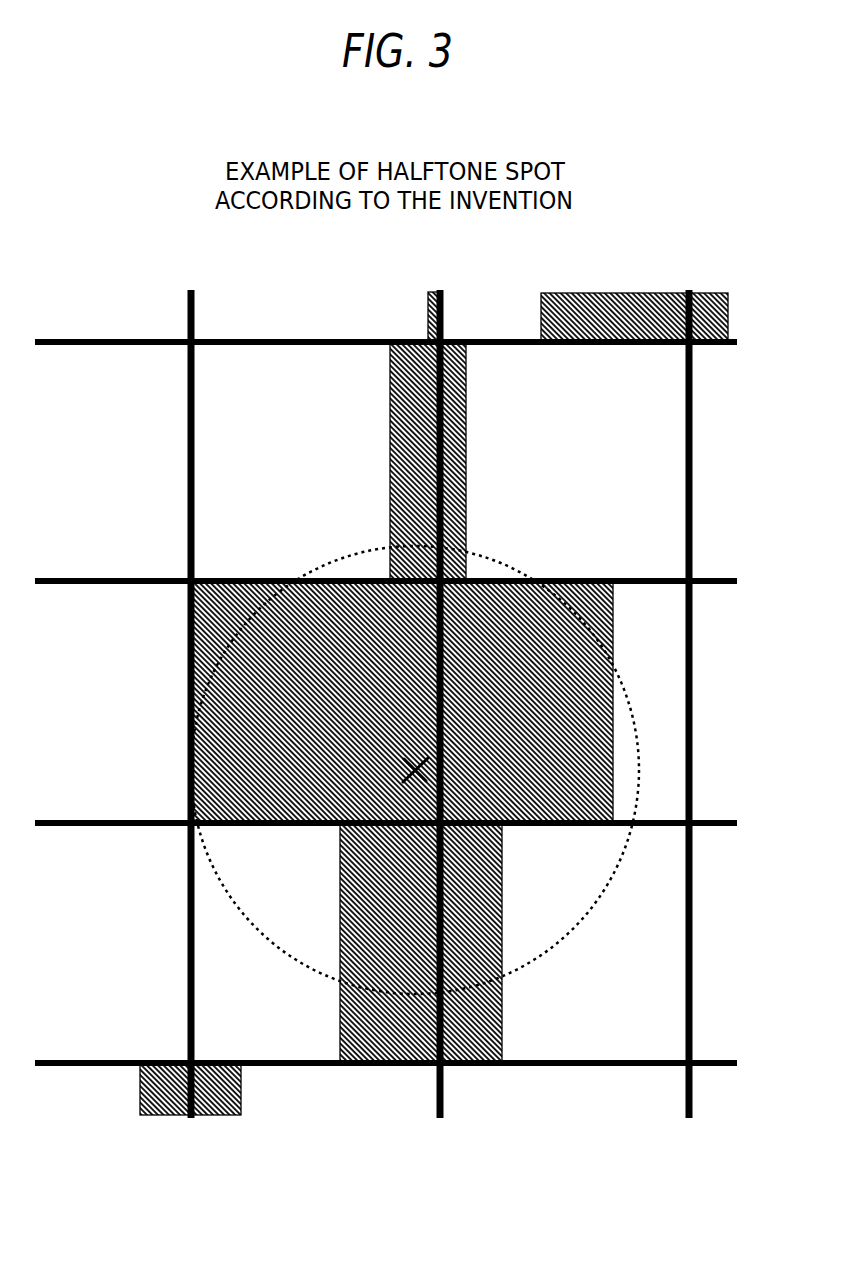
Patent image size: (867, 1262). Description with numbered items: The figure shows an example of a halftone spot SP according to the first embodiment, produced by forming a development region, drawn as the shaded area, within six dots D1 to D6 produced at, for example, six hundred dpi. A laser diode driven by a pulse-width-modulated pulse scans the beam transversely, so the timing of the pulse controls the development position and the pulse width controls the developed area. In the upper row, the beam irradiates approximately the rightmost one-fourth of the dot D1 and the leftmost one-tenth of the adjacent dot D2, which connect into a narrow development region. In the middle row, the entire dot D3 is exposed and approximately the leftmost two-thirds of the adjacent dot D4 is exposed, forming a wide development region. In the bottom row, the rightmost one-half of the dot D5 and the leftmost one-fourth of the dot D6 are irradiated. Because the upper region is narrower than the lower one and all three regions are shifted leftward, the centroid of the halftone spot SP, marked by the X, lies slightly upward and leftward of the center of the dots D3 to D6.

The dot D1 is at (315, 461).
The dot D2 is at (564, 461).
The dot D3 is at (188, 658).
The dot D4 is at (690, 647).
The dot D5 is at (315, 943).
The dot D6 is at (564, 943).
The halftone spot SP is at (620, 866).